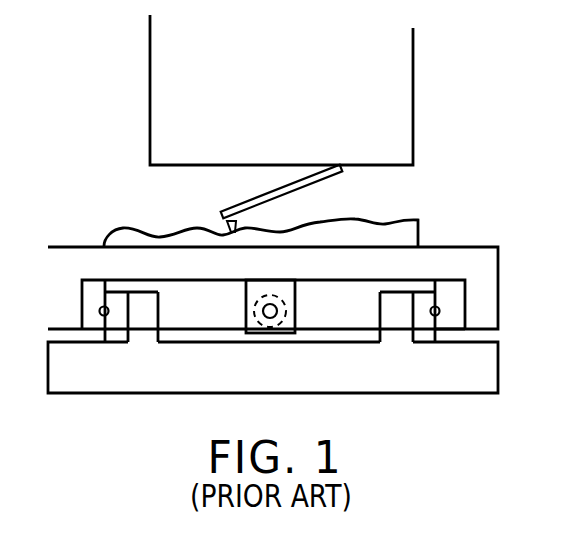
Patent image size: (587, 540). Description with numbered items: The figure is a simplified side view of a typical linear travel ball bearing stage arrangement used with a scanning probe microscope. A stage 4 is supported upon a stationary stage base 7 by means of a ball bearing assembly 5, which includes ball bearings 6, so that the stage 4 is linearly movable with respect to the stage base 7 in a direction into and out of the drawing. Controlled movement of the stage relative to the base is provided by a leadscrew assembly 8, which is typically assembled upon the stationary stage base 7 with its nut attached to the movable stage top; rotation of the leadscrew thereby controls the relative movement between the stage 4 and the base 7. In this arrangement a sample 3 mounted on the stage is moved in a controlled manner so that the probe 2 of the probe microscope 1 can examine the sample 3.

The probe microscope 1 is at (412, 66).
The probe 2 is at (322, 180).
The sample 3 is at (422, 233).
The stage 4 is at (492, 275).
The ball bearing assembly 5 is at (458, 308).
The ball bearings 6 is at (99, 311).
The stage base 7 is at (488, 370).
The leadscrew assembly 8 is at (292, 303).